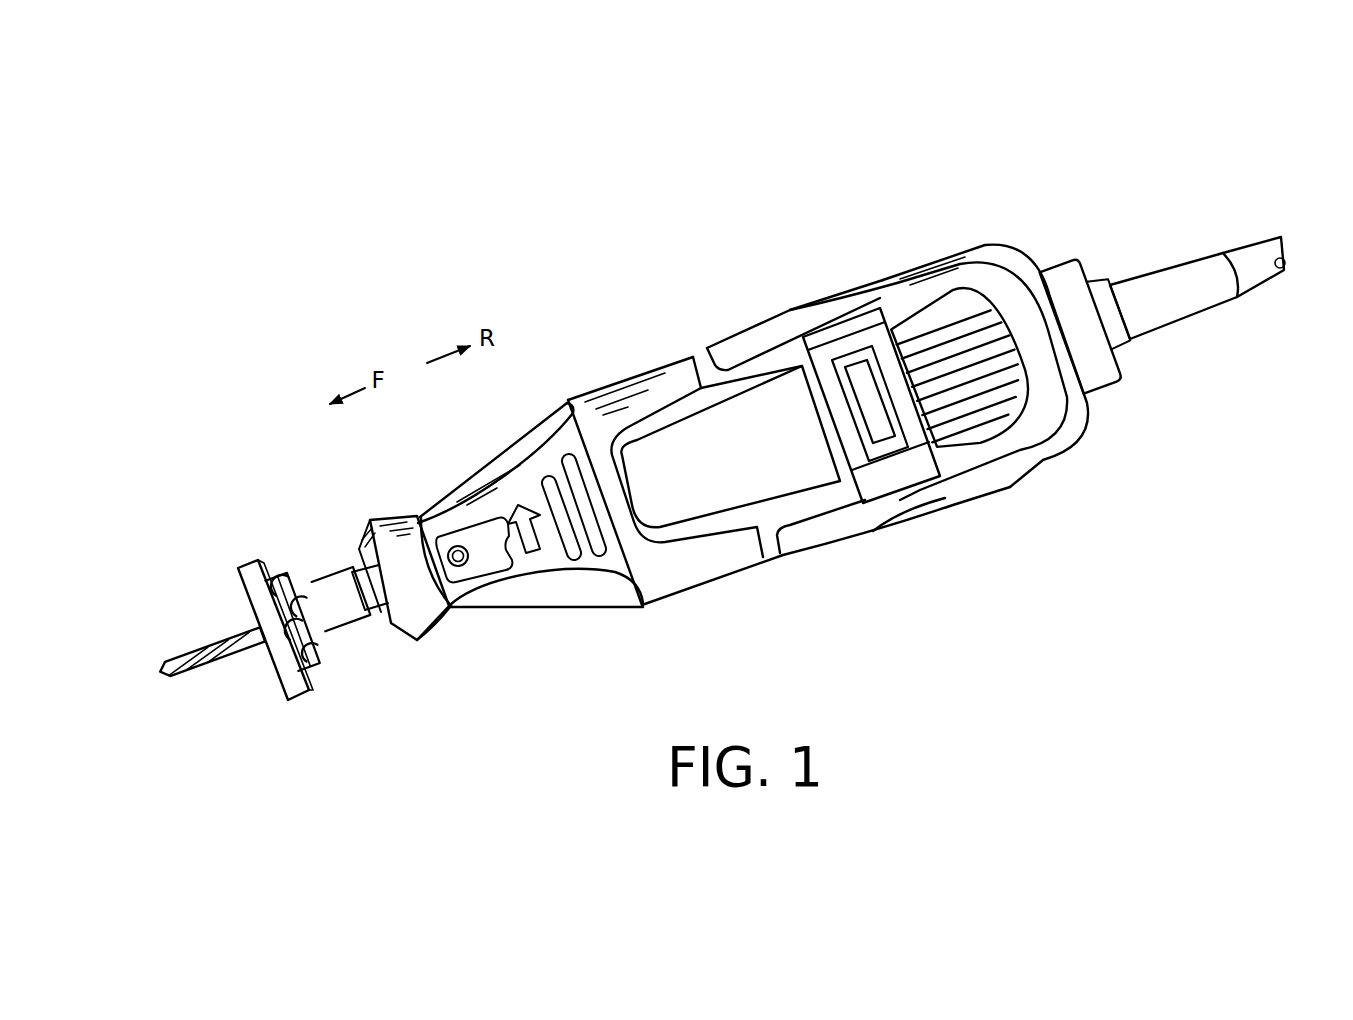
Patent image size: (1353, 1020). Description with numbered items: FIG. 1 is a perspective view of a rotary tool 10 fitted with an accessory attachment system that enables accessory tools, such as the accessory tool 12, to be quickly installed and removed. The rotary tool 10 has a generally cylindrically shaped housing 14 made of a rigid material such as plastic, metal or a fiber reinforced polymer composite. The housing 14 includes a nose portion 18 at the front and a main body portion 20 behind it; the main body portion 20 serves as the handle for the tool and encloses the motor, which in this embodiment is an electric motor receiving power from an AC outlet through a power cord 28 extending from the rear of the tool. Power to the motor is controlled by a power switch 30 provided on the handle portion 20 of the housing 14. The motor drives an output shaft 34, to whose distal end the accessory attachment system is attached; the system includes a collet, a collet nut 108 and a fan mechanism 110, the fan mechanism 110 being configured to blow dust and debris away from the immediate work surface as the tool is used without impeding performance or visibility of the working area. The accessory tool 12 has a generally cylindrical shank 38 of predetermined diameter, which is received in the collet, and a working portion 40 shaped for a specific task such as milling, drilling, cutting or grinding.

The rotary tool 10 is at (887, 152).
The accessory tool 12 is at (207, 668).
The housing 14 is at (612, 366).
The nose portion 18 is at (445, 498).
The main body portion 20 is at (929, 262).
The power cord 28 is at (1152, 272).
The power switch 30 is at (880, 425).
The output shaft 34 is at (360, 565).
The shank 38 is at (248, 630).
The working portion 40 is at (163, 665).
The collet nut 108 is at (333, 637).
The fan mechanism 110 is at (302, 700).